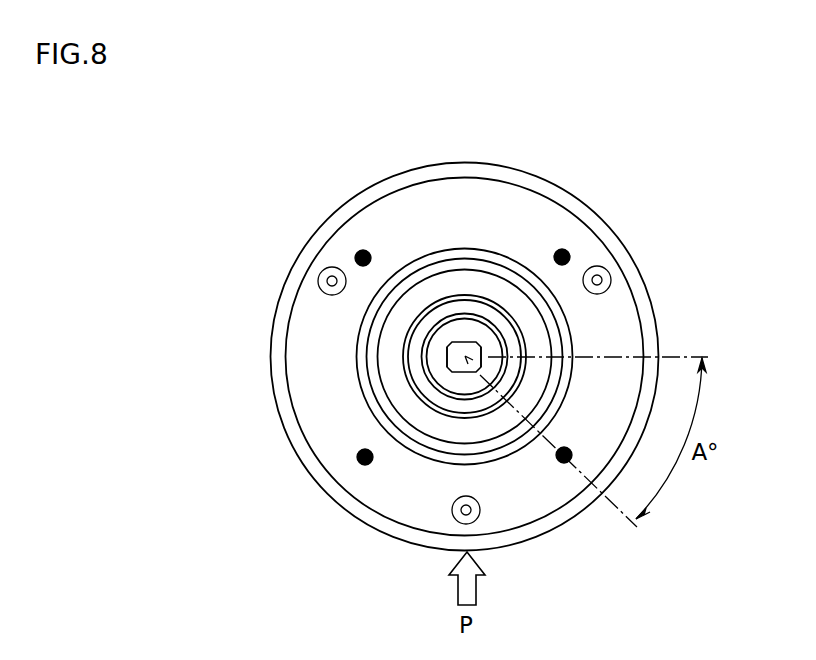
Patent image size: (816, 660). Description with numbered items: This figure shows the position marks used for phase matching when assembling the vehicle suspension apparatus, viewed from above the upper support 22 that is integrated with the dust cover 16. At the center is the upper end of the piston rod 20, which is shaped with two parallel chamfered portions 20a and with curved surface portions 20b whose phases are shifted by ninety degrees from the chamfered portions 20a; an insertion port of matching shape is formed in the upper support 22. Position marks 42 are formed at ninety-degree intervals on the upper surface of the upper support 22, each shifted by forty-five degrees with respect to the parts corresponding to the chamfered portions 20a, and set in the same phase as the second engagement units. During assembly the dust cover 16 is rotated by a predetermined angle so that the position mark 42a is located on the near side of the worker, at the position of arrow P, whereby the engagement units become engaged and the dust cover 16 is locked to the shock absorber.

The piston rod 20 is at (458, 348).
The chamfered portions 20a is at (463, 342).
The curved surface portions 20b is at (447, 351).
The upper support 22 is at (465, 340).
The dust cover 16 is at (513, 213).
The position marks 42 is at (468, 375).
The position mark 42a is at (558, 451).